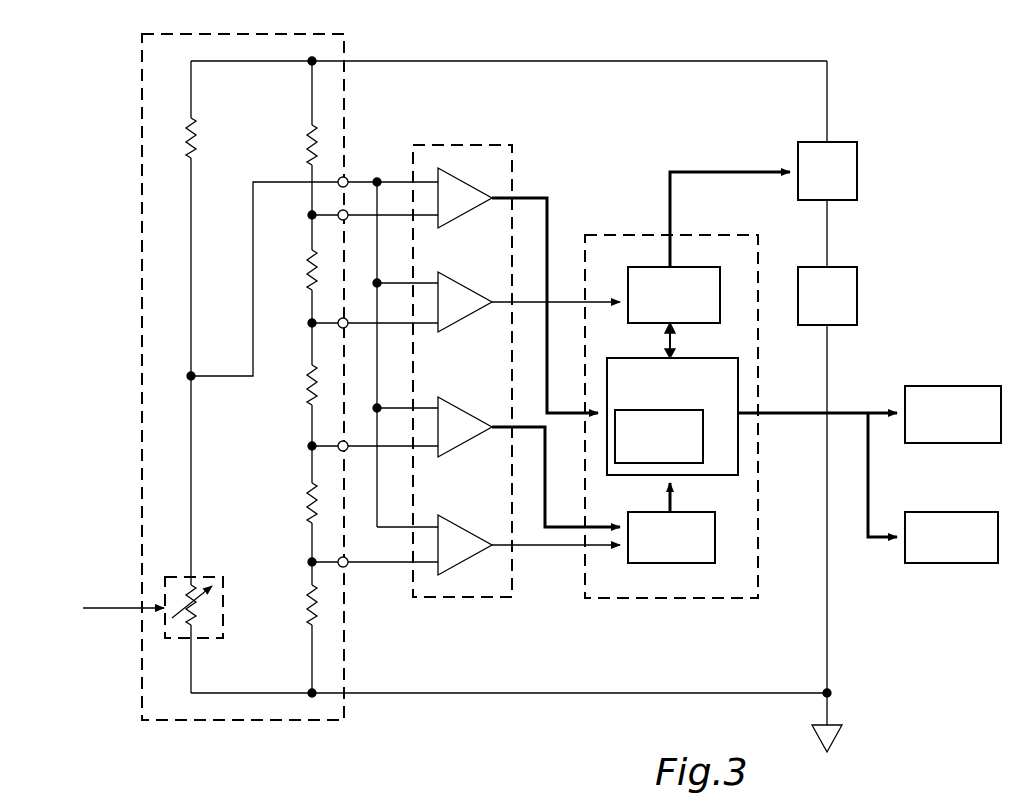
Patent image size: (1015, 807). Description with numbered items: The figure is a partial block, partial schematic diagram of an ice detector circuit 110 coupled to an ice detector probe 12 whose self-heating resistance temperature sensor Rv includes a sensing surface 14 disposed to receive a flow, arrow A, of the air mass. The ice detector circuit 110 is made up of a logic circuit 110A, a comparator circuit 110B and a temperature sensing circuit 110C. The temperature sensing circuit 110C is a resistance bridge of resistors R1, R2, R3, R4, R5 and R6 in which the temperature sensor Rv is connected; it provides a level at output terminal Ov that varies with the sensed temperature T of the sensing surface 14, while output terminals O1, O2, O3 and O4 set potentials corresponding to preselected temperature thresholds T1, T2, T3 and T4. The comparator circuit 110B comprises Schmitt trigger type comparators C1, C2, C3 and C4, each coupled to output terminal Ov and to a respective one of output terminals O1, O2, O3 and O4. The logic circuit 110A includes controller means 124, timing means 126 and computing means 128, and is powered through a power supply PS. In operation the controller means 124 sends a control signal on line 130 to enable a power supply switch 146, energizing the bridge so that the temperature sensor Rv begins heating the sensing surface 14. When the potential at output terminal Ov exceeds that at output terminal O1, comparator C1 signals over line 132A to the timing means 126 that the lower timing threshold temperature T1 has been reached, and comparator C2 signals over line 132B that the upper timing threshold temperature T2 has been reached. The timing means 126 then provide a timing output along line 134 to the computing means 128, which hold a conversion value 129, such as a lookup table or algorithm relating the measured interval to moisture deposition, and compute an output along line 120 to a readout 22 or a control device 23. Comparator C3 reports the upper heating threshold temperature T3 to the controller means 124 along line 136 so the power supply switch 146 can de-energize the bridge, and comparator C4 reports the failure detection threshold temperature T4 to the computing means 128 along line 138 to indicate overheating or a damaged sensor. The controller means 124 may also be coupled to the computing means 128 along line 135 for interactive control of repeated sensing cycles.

The ice detector circuit 110 is at (545, 58).
The logic circuit 110A is at (668, 600).
The comparator circuit 110B is at (460, 600).
The temperature sensing circuit 110C is at (245, 726).
The ice detector probe 12 is at (168, 658).
The sensing surface 14 is at (170, 626).
The output line 120 is at (849, 412).
The controller means 124 is at (674, 295).
The timing means 126 is at (671, 537).
The computing means 128 is at (672, 416).
The conversion value 129 is at (659, 436).
The control signal line 130 is at (672, 206).
The comparator C1 output line 132A is at (540, 550).
The comparator C2 output line 132B is at (530, 430).
The timing output line 134 is at (675, 494).
The controller-computing link line 135 is at (674, 340).
The comparator C3 output line 136 is at (532, 308).
The comparator C4 output line 138 is at (536, 192).
The power supply switch 146 is at (827, 171).
The readout 22 is at (953, 414).
The control device 23 is at (951, 537).
The sensed temperature T is at (182, 598).
The airflow arrow A is at (109, 612).
The self-heating resistance temperature sensor Rv is at (211, 617).
The resistor R1 is at (308, 610).
The resistor R2 is at (309, 498).
The resistor R3 is at (306, 389).
The resistor R4 is at (306, 277).
The resistor R5 is at (306, 152).
The resistor R6 is at (197, 150).
The output terminal Ov is at (347, 177).
The output terminal O1 is at (346, 567).
The output terminal O2 is at (346, 451).
The output terminal O3 is at (346, 328).
The output terminal O4 is at (346, 220).
The comparator C1 is at (465, 545).
The comparator C2 is at (465, 427).
The comparator C3 is at (465, 302).
The comparator C4 is at (465, 198).
The lower timing threshold temperature T1 is at (604, 556).
The upper timing threshold temperature T2 is at (602, 522).
The upper heating threshold temperature T3 is at (602, 298).
The failure detection threshold temperature T4 is at (586, 408).
The power supply PS is at (827, 296).